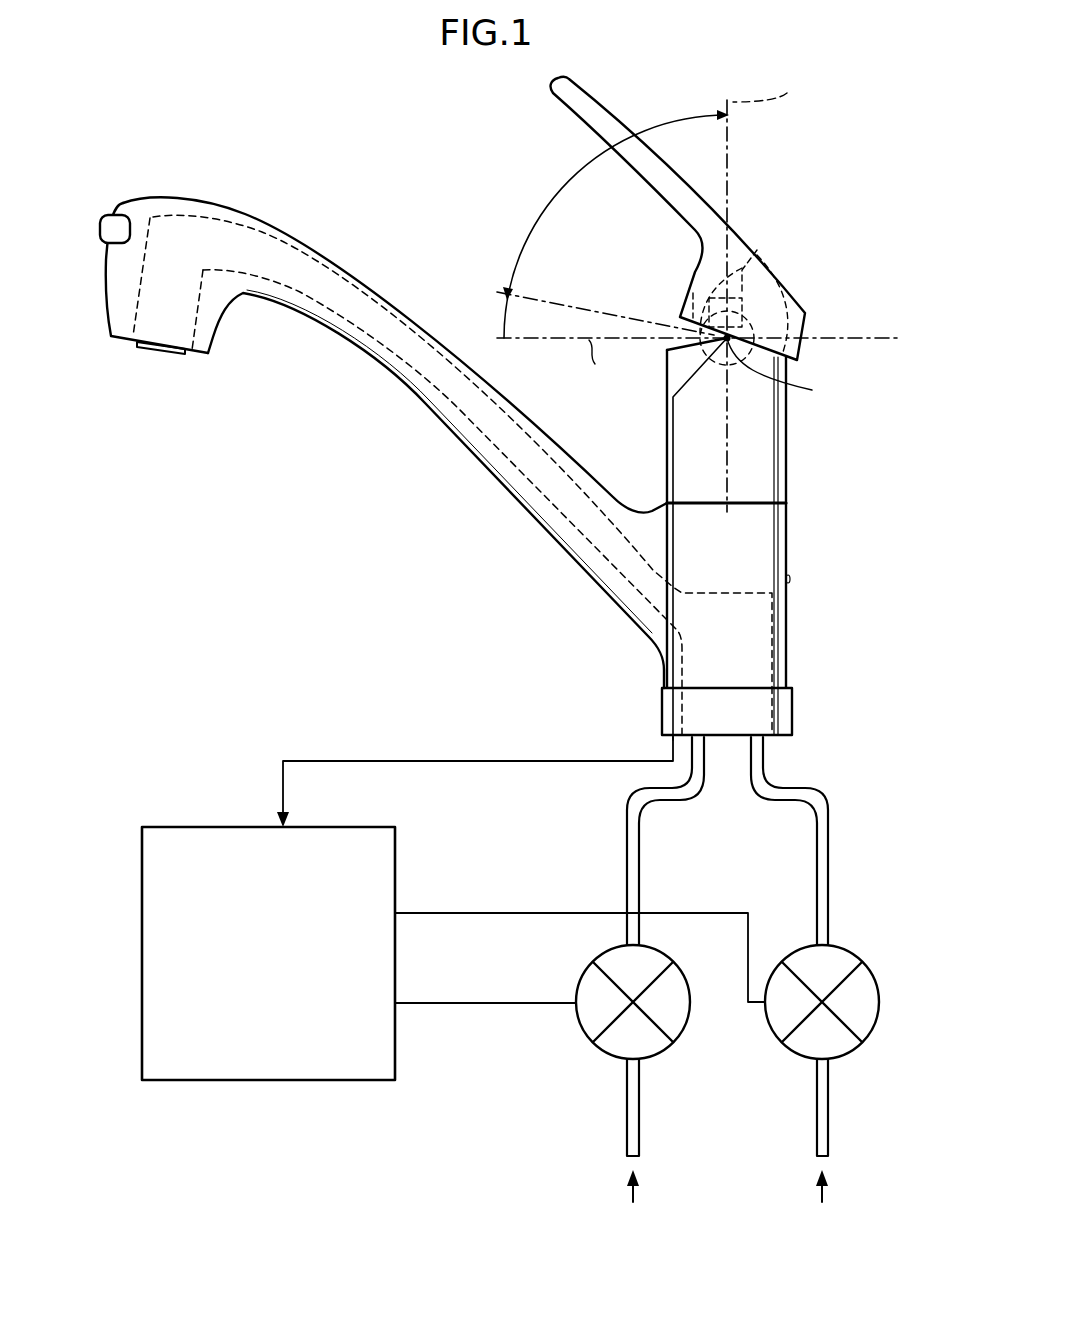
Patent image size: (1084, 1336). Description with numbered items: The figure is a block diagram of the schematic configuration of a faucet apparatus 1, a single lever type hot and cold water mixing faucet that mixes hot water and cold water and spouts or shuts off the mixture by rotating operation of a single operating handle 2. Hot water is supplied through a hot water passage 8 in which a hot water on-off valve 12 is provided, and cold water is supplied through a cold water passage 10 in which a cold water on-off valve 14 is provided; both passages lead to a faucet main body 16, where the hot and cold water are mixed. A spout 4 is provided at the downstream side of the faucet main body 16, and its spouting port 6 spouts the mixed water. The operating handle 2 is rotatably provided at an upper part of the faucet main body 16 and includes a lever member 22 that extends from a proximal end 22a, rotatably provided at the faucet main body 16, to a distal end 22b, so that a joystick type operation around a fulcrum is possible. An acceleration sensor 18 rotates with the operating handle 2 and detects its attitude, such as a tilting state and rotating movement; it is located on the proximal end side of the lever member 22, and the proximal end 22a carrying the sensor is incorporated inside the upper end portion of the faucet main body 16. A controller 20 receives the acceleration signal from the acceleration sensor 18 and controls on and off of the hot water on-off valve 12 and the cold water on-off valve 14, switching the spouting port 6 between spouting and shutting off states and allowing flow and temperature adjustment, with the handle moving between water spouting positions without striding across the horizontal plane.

The faucet apparatus 1 is at (418, 143).
The operating handle 2 is at (690, 161).
The spout 4 is at (241, 210).
The spouting port 6 is at (160, 353).
The hot water passage 8 is at (625, 858).
The cold water passage 10 is at (830, 859).
The hot water on-off valve 12 is at (592, 1043).
The cold water on-off valve 14 is at (845, 1053).
The faucet main body 16 is at (787, 538).
The acceleration sensor 18 is at (698, 302).
The controller 20 is at (283, 1082).
The lever member 22 is at (843, 202).
The proximal end 22a is at (760, 315).
The distal end 22b is at (745, 285).